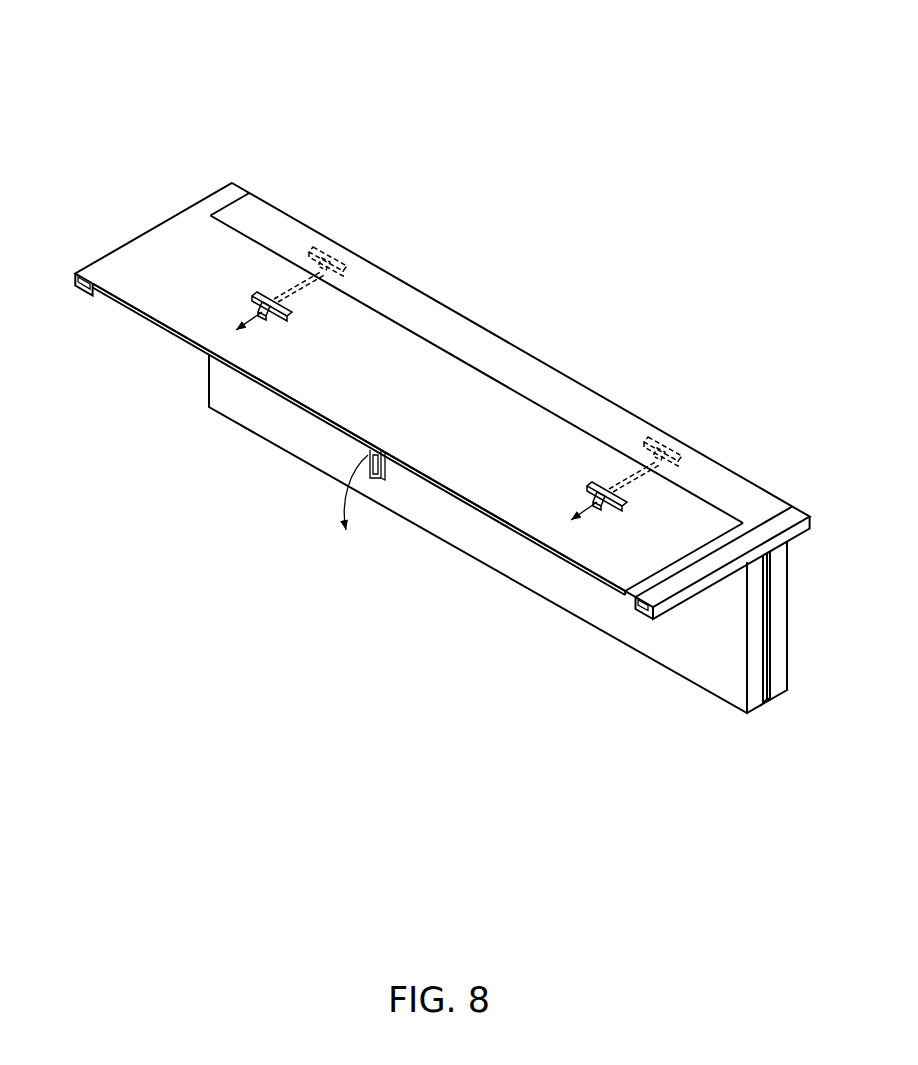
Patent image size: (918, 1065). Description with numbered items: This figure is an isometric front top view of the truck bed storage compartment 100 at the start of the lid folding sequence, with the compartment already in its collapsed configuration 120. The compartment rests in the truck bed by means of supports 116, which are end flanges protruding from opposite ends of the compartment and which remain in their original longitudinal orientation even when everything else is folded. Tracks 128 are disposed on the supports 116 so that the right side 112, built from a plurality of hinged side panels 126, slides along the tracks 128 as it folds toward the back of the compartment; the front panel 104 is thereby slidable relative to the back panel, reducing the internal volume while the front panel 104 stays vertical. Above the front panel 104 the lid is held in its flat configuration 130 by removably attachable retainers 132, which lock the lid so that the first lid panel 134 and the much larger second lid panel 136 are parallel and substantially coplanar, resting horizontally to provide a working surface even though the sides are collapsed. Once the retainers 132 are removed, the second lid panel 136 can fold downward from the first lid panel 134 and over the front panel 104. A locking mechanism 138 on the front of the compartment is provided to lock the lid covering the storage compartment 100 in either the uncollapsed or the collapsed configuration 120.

The storage compartment 100 is at (636, 58).
The front panel 104 is at (268, 418).
The right side 112 is at (768, 612).
The supports 116 is at (153, 238).
The collapsed configuration 120 is at (504, 165).
The side panels 126 is at (769, 682).
The tracks 128 is at (77, 290).
The flat configuration 130 is at (486, 398).
The retainers 132 is at (283, 283).
The first lid panel 134 is at (417, 310).
The second lid panel 136 is at (550, 427).
The locking mechanism 138 is at (378, 482).